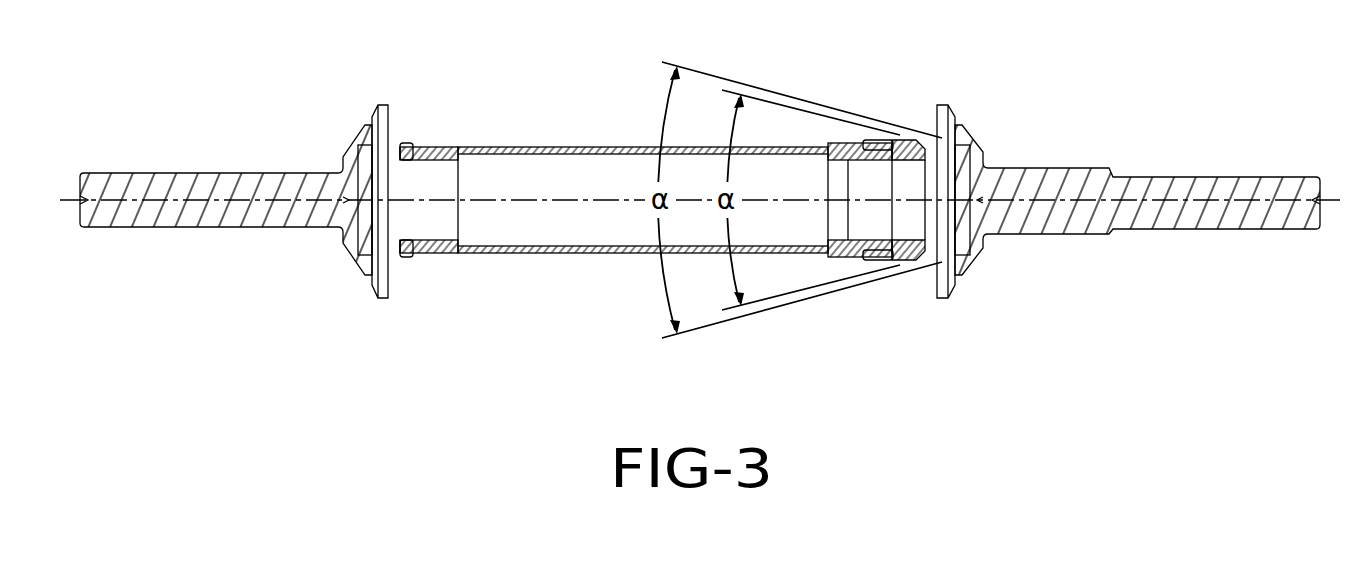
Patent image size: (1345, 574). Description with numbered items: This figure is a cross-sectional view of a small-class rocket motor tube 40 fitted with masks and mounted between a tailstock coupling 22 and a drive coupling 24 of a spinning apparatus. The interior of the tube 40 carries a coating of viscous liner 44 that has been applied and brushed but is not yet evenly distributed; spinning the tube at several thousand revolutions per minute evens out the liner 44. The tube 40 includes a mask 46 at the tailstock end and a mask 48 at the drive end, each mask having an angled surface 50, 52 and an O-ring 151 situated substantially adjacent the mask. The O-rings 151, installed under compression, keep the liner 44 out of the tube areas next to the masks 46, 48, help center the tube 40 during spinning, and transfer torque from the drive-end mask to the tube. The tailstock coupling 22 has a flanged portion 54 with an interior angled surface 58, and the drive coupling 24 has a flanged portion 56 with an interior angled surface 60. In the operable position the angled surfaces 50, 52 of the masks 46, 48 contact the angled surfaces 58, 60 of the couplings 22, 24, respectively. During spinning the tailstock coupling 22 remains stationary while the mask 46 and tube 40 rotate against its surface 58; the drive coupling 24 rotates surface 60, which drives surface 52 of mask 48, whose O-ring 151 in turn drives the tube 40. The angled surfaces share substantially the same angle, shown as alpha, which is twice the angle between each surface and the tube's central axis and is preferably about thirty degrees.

The tailstock coupling 22 is at (208, 173).
The drive coupling 24 is at (1198, 176).
The rocket motor tube 40 is at (606, 147).
The viscous liner 44 is at (590, 147).
The mask 46 is at (446, 146).
The mask 48 is at (897, 258).
The angled surface 50 is at (402, 146).
The angled surface 52 is at (926, 140).
The flanged portion 54 is at (361, 139).
The flanged portion 56 is at (968, 137).
The interior angled surface 58 is at (362, 138).
The interior angled surface 60 is at (958, 140).
The O-ring 151 is at (458, 146).